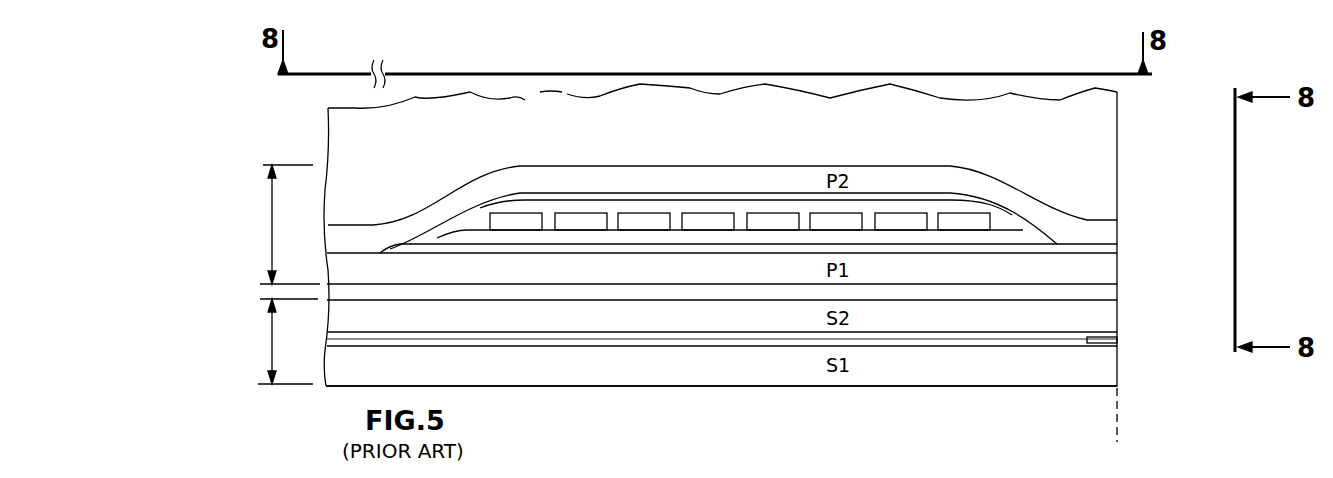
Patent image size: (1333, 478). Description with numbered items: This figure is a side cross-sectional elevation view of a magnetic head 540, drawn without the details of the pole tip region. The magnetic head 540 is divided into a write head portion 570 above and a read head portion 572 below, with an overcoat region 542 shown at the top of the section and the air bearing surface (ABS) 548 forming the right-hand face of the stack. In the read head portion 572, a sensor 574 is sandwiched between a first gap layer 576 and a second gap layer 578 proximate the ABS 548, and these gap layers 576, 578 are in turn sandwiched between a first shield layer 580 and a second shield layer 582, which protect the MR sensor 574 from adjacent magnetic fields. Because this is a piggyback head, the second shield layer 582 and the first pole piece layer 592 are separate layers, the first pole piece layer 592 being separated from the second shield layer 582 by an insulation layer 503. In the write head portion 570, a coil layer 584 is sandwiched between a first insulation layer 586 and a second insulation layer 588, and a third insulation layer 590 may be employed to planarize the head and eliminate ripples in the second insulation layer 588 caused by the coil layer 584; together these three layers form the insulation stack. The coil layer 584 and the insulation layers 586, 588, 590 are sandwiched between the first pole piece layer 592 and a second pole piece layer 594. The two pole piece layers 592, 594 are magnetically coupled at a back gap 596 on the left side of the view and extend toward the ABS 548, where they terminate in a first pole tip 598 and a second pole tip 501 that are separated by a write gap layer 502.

The magnetic head 540 is at (308, 121).
The overcoat layer 542 is at (1105, 124).
The air bearing surface 548 is at (1117, 433).
The write head portion 570 is at (267, 229).
The read head portion 572 is at (265, 345).
The sensor 574 is at (1117, 340).
The first gap layer 576 is at (791, 348).
The second gap layer 578 is at (753, 333).
The first shield layer 580 is at (905, 372).
The second shield layer 582 is at (976, 320).
The coil layer 584 is at (770, 218).
The first insulation layer 586 is at (684, 238).
The second insulation layer 588 is at (1005, 222).
The third insulation layer 590 is at (556, 198).
The first pole piece layer 592 is at (1045, 300).
The second pole piece layer 594 is at (904, 178).
The back gap 596 is at (369, 225).
The first pole tip 598 is at (1117, 284).
The second pole tip 501 is at (1110, 236).
The write gap layer 502 is at (1117, 253).
The insulation layer 503 is at (613, 295).